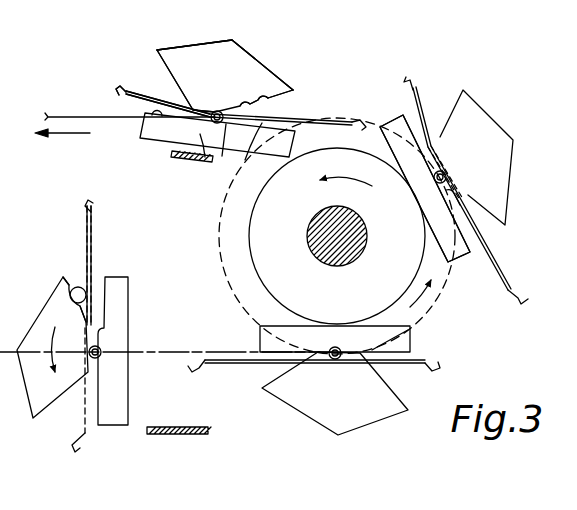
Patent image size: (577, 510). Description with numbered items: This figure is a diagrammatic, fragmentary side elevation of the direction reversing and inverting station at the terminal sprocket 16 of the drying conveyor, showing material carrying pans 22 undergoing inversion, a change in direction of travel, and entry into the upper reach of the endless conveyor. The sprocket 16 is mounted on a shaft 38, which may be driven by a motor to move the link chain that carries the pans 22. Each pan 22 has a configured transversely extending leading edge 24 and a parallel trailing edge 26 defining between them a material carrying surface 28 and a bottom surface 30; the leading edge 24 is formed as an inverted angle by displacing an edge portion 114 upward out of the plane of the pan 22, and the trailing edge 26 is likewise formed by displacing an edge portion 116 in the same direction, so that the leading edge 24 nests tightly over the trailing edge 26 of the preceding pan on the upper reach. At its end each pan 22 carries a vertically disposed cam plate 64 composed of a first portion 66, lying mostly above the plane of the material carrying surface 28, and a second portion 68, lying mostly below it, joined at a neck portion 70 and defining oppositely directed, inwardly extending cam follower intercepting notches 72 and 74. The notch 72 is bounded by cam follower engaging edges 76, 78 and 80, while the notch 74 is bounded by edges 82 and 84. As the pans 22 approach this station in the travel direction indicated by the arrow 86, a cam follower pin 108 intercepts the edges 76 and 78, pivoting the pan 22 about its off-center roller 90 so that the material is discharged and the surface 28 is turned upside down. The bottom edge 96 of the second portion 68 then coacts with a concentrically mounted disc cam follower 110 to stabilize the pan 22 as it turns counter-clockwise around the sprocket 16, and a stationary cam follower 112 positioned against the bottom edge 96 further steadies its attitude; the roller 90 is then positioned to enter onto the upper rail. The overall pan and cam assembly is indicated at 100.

The terminal sprocket 16 is at (202, 258).
The material carrying pan 22 is at (296, 109).
The leading edge 24 is at (119, 78).
The trailing edge 26 is at (364, 114).
The material carrying surface 28 is at (151, 97).
The bottom surface 30 is at (134, 97).
The shaft 38 is at (360, 248).
The cam plate 64 is at (252, 46).
The first portion 66 is at (212, 48).
The second portion 68 is at (208, 134).
The neck portion 70 is at (228, 124).
The cam follower intercepting notch 72 is at (293, 106).
The cam follower intercepting notch 74 is at (165, 83).
The cam follower engaging edge 76 is at (285, 83).
The cam follower engaging edge 78 is at (262, 103).
The cam follower engaging edge 80 is at (278, 121).
The cam follower engaging edge 82 is at (180, 95).
The cam follower engaging edge 84 is at (146, 137).
The arrow 86 is at (68, 137).
The off-center roller 90 is at (219, 111).
The bottom edge 96 is at (176, 134).
The blade assembly 100 is at (257, 72).
The cam follower pin 108 is at (76, 286).
The disc cam follower 110 is at (273, 274).
The stationary cam follower 112 is at (206, 160).
The edge portion 114 is at (126, 84).
The edge portion 116 is at (365, 114).